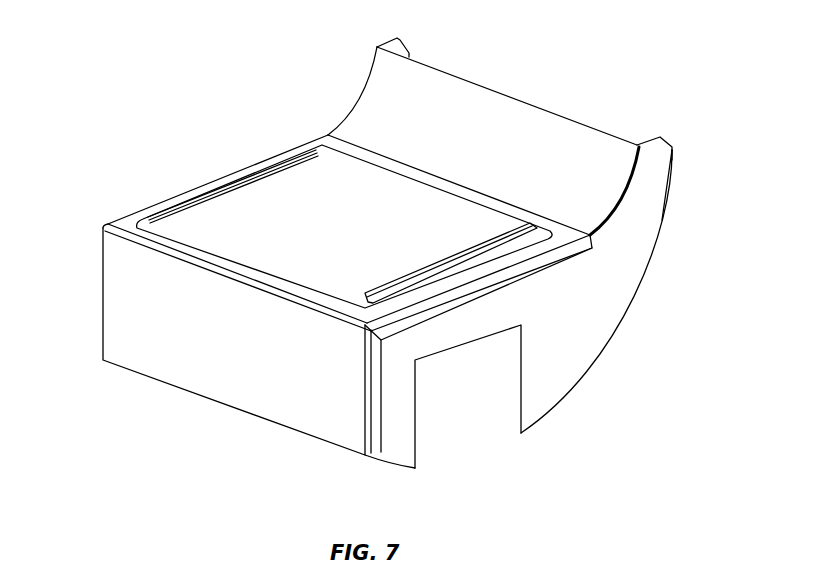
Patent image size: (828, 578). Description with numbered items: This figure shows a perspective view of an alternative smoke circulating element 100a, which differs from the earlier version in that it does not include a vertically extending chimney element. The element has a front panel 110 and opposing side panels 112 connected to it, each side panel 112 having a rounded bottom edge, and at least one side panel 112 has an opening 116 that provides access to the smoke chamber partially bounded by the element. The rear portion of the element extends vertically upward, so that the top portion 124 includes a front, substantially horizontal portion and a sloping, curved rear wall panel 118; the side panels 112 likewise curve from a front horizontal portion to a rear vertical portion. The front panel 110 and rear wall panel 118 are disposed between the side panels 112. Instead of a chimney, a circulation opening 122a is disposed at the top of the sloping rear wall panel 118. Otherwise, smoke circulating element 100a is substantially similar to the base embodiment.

The smoke circulating element 100a is at (278, 95).
The front panel 110 is at (170, 337).
The side panel 112 is at (593, 290).
The opening 116 is at (467, 403).
The rear wall panel 118 is at (530, 168).
The circulation opening 122a is at (512, 83).
The top portion 124 is at (262, 232).